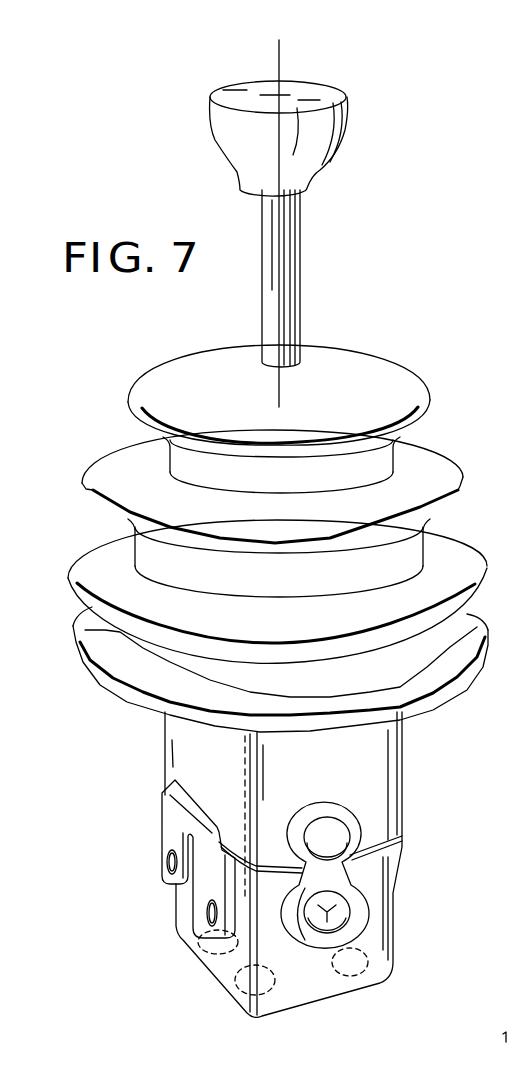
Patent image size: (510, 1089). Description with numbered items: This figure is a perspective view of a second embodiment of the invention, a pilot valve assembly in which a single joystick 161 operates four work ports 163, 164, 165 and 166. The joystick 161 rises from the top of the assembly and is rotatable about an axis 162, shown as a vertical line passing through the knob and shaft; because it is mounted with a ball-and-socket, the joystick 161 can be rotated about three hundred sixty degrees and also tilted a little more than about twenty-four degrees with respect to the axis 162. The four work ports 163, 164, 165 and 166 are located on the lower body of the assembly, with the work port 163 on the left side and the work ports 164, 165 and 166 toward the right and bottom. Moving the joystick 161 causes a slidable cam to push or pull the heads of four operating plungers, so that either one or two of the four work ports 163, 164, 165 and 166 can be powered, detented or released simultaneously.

The joystick 161 is at (280, 252).
The axis 162 is at (282, 67).
The work port 163 is at (192, 955).
The work port 164 is at (372, 919).
The work port 165 is at (360, 974).
The work port 166 is at (273, 997).